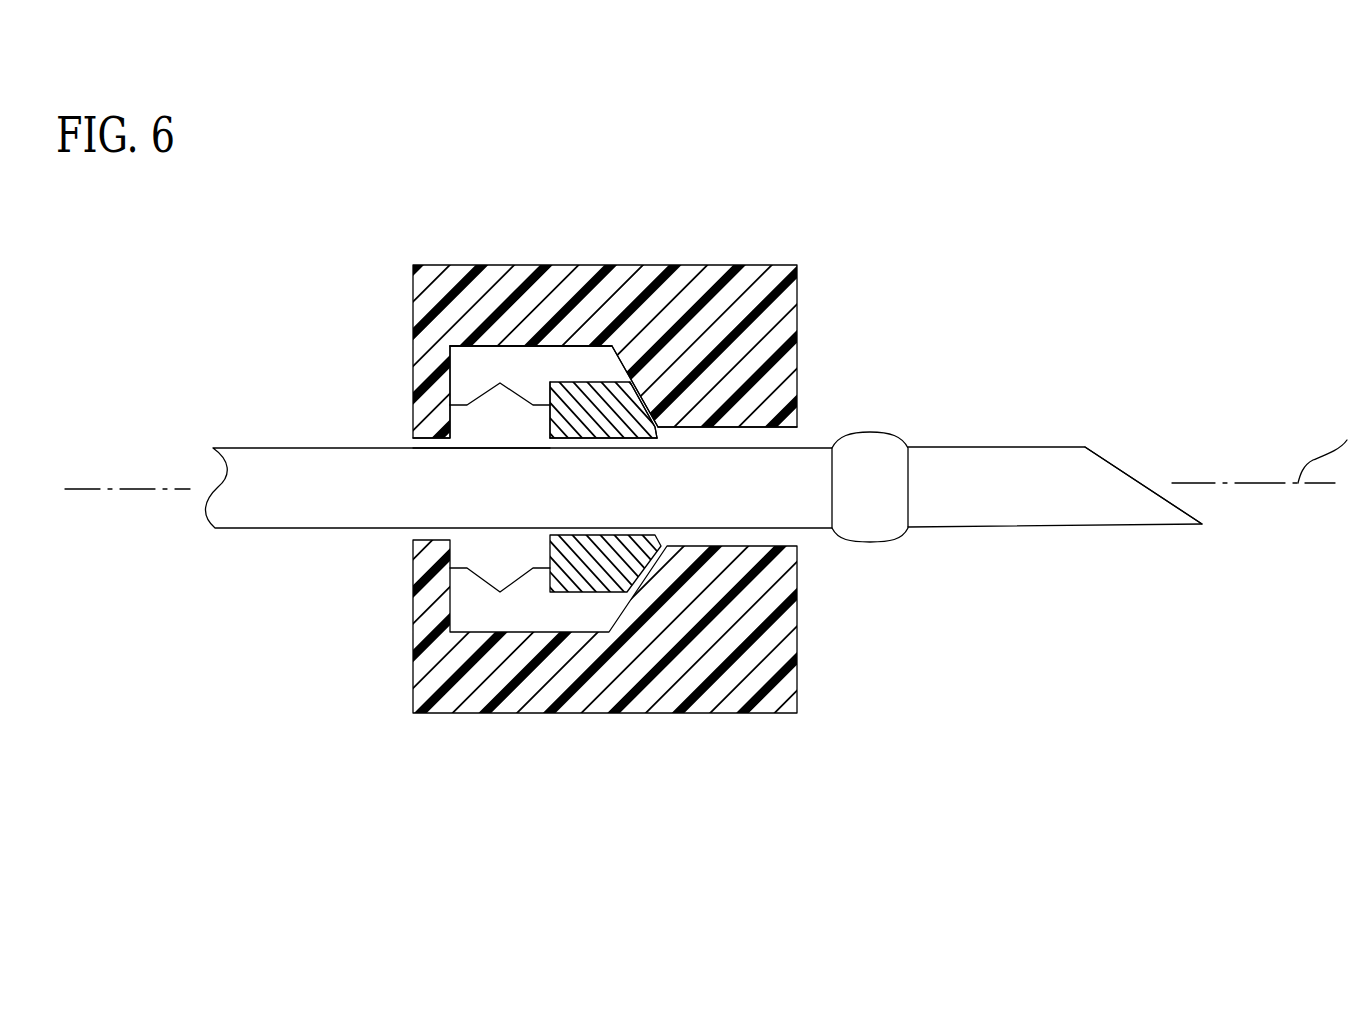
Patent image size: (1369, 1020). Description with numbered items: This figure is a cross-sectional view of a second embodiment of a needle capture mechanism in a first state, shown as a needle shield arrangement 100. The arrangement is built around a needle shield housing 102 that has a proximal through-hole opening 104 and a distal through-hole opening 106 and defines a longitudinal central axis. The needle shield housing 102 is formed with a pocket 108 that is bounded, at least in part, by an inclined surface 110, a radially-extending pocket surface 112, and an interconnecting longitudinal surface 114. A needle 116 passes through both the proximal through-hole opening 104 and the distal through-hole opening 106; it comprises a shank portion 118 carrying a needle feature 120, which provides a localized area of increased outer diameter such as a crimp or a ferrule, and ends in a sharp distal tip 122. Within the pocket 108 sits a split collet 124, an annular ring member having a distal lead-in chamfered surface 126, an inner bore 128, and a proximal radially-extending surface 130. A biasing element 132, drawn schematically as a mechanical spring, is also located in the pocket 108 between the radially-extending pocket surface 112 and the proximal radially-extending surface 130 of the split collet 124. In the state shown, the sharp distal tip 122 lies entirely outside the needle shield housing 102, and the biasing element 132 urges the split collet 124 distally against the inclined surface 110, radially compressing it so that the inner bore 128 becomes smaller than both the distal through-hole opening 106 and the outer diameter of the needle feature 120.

The needle shield arrangement 100 is at (822, 186).
The needle shield housing 102 is at (790, 322).
The proximal through-hole opening 104 is at (410, 438).
The distal through-hole opening 106 is at (784, 432).
The pocket 108 is at (550, 360).
The inclined surface 110 is at (622, 608).
The radially-extending pocket surface 112 is at (510, 347).
The interconnecting longitudinal surface 114 is at (478, 352).
The needle 116 is at (236, 448).
The shank portion 118 is at (1000, 526).
The needle feature 120 is at (868, 542).
The sharp distal tip 122 is at (1108, 460).
The split collet 124 is at (601, 424).
The distal lead-in chamfered surface 126 is at (653, 432).
The inner bore 128 is at (630, 437).
The proximal radially-extending surface 130 is at (550, 423).
The biasing element 132 is at (443, 448).